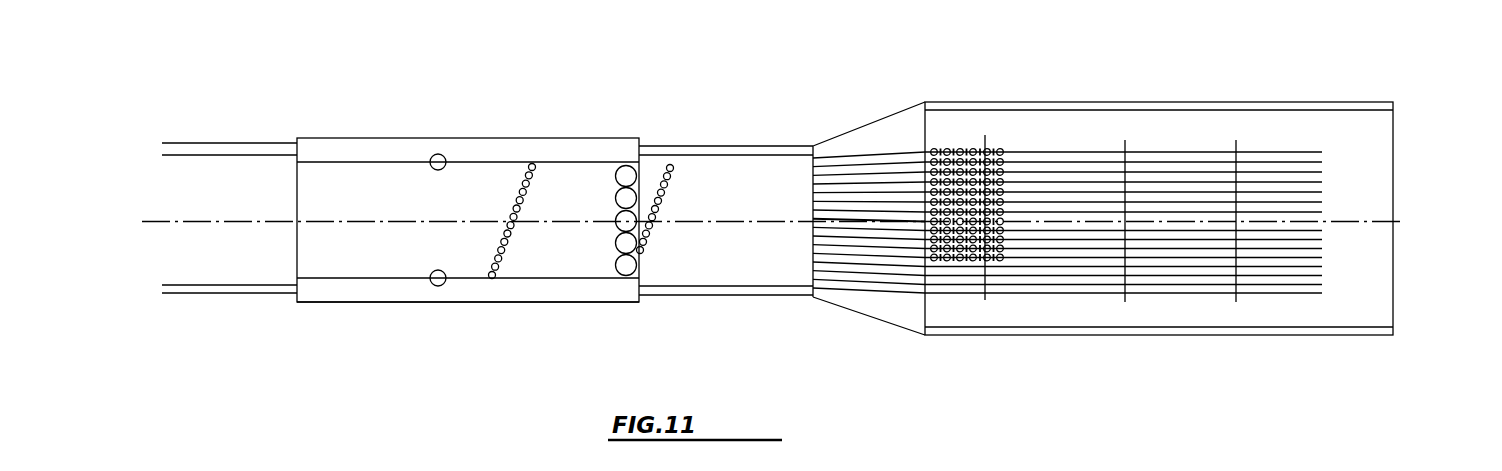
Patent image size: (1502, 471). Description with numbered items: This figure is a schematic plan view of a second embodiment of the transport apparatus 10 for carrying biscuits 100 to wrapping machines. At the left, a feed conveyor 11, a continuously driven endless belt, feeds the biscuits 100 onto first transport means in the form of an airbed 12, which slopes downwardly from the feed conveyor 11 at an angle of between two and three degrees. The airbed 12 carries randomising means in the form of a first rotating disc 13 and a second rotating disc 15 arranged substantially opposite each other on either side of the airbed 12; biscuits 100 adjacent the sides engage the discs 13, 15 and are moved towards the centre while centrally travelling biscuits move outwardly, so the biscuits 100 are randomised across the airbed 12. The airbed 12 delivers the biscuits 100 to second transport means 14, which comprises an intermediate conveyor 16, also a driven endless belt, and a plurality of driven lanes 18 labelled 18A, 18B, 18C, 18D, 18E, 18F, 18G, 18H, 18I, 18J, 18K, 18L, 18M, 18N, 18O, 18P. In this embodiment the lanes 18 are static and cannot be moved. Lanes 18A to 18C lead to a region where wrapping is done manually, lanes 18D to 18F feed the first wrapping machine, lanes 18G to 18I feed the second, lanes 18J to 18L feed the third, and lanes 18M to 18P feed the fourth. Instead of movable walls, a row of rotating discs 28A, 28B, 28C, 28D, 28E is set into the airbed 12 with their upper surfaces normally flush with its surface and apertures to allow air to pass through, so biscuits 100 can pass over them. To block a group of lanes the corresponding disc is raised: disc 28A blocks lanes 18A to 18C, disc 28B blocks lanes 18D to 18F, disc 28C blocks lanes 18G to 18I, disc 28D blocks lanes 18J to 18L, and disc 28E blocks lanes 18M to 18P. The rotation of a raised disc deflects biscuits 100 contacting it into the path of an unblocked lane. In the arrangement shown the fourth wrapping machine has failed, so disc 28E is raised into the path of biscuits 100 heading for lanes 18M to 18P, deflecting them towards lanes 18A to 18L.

The transport apparatus 10 is at (553, 308).
The feed conveyor 11 is at (230, 181).
The airbed 12 is at (342, 150).
The first rotating disc 13 is at (436, 155).
The second transport means 14 is at (835, 132).
The second rotating disc 15 is at (436, 286).
The intermediate conveyor 16 is at (712, 166).
The lanes 18 is at (879, 158).
The lane 18A is at (1322, 156).
The lane 18B is at (1067, 164).
The lane 18C is at (1320, 174).
The lane 18D is at (1318, 185).
The lane 18E is at (1067, 192).
The lane 18F is at (1320, 204).
The lane 18G is at (1320, 211).
The lane 18H is at (869, 220).
The lane 18I is at (1320, 230).
The lane 18J is at (1320, 240).
The lane 18K is at (1067, 247).
The lane 18L is at (1320, 259).
The lane 18M is at (1320, 268).
The lane 18N is at (1067, 273).
The lane 18O is at (1067, 281).
The lane 18P is at (1301, 289).
The rotating disc 28A is at (625, 176).
The rotating disc 28B is at (625, 198).
The rotating disc 28C is at (625, 221).
The rotating disc 28D is at (625, 243).
The rotating disc 28E is at (626, 266).
The biscuits 100 is at (495, 277).